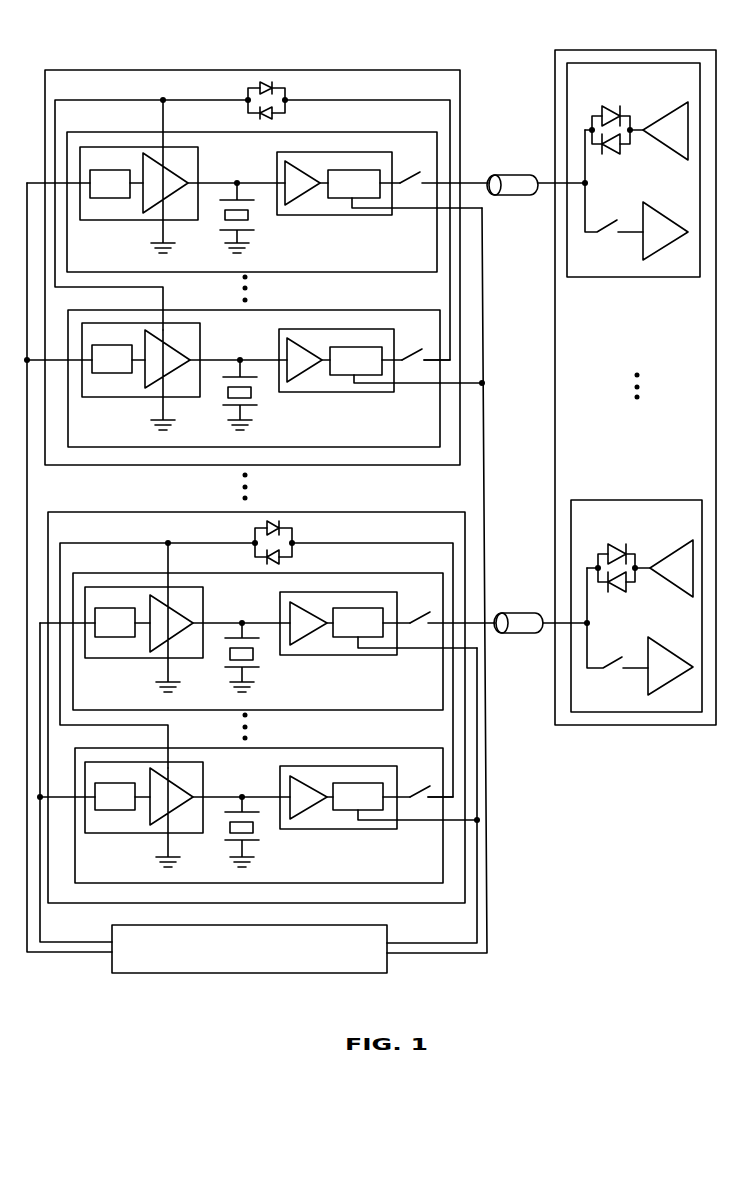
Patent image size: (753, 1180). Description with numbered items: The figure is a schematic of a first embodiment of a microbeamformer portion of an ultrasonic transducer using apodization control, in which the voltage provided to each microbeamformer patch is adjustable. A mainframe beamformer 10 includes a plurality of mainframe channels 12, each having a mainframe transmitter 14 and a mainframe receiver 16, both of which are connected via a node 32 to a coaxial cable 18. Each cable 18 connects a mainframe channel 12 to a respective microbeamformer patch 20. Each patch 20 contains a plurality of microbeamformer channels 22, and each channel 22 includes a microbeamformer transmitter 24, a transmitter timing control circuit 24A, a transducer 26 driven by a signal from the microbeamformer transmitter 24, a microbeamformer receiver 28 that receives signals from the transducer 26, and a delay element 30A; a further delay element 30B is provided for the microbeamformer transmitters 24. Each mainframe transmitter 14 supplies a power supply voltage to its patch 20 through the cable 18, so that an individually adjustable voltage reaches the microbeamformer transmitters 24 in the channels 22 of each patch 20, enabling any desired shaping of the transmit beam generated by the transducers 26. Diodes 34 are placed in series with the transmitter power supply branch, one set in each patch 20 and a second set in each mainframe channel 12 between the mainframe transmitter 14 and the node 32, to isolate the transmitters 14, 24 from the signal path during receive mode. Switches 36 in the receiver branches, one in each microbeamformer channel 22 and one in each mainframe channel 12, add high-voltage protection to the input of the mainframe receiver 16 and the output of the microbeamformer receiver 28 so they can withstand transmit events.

The mainframe beamformer 10 is at (625, 750).
The mainframe channel 12 is at (673, 278).
The mainframe transmitter 14 is at (668, 147).
The mainframe receiver 16 is at (668, 214).
The coaxial cable 18 is at (520, 190).
The microbeamformer patch 20 is at (133, 70).
The microbeamformer channel 22 is at (327, 132).
The microbeamformer transmitter 24 is at (182, 197).
The transmitter timing control circuit 24A is at (153, 960).
The transducer 26 is at (250, 217).
The microbeamformer receiver 28 is at (310, 195).
The delay element 30A is at (343, 188).
The delay element 30B is at (107, 190).
The node 32 is at (585, 183).
The diodes 34 is at (287, 90).
The switch 36 is at (412, 188).